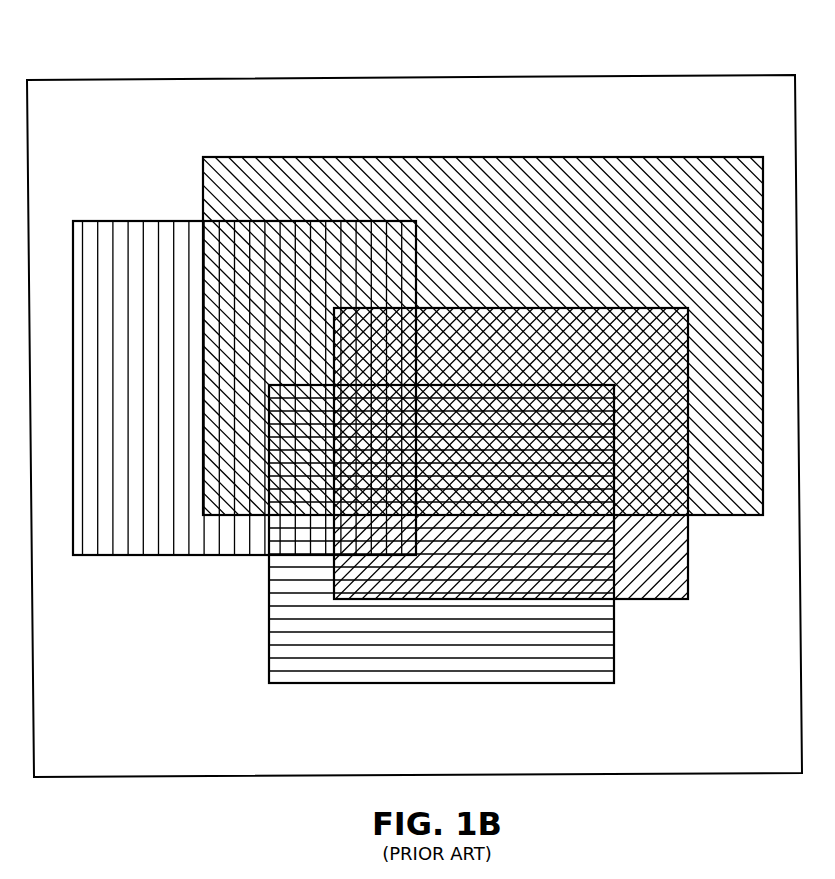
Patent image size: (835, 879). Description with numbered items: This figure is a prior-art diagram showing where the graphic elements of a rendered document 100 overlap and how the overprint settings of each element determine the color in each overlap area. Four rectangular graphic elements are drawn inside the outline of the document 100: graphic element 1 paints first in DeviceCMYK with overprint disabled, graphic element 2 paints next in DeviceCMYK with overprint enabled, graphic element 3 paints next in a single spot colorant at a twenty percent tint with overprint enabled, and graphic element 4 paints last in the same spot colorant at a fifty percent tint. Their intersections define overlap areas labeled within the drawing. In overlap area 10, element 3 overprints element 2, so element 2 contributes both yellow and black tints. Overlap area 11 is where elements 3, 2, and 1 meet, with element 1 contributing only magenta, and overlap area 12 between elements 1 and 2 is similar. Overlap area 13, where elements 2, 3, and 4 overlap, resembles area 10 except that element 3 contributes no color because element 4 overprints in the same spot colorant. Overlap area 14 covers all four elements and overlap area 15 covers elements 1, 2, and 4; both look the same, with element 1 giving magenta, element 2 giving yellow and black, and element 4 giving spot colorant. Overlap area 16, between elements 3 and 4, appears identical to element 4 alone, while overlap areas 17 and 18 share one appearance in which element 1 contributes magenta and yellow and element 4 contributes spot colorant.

The document 100 is at (124, 80).
The graphic element 1 is at (688, 599).
The graphic element 2 is at (762, 157).
The graphic element 3 is at (73, 221).
The graphic element 4 is at (269, 683).
The overlap area 10 is at (263, 354).
The overlap area 11 is at (365, 361).
The overlap area 12 is at (495, 361).
The overlap area 13 is at (291, 436).
The overlap area 14 is at (365, 436).
The overlap area 15 is at (453, 436).
The overlap area 16 is at (285, 547).
The overlap area 17 is at (360, 547).
The overlap area 18 is at (448, 547).